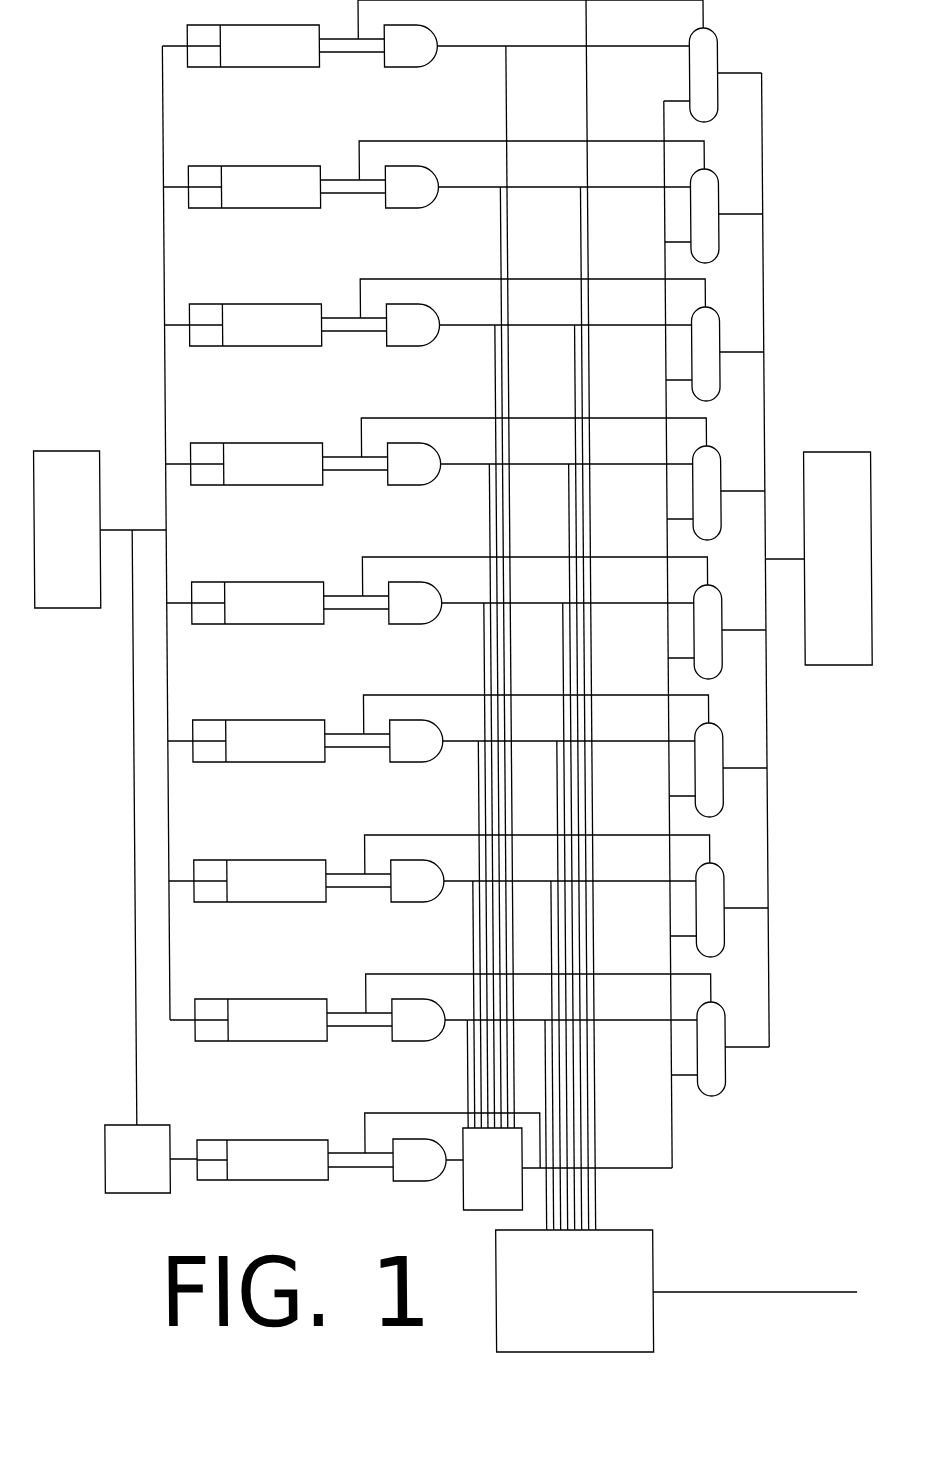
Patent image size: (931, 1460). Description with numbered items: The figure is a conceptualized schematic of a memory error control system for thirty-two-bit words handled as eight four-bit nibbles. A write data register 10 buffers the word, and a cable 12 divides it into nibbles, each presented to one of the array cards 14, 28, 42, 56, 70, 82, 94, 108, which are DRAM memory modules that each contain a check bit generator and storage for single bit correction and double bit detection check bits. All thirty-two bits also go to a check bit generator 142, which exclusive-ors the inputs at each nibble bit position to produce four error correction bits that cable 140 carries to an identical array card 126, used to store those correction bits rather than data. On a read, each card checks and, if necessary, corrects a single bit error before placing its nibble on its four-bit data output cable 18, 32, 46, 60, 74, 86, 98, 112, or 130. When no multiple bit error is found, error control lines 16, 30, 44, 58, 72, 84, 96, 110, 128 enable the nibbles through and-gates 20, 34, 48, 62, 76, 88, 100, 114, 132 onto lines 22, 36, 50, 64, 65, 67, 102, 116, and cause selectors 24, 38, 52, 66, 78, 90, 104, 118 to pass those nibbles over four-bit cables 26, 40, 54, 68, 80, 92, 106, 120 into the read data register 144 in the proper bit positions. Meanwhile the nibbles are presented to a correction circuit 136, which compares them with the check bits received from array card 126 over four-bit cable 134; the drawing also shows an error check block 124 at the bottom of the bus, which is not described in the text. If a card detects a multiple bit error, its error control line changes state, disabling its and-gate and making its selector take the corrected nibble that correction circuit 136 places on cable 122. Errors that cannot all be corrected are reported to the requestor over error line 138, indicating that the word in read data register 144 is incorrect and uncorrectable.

The write data register 10 is at (67, 510).
The cable 12 is at (135, 807).
The array card 14 is at (241, 70).
The error control line 16 is at (501, 19).
The four-bit data output cable 18 is at (351, 75).
The and-gate 20 is at (404, 61).
The line 22 is at (568, 615).
The selector 24 is at (681, 75).
The four-bit cable 26 is at (733, 38).
The array card 28 is at (242, 172).
The error control line 30 is at (502, 158).
The four-bit data output cable 32 is at (339, 217).
The and-gate 34 is at (402, 203).
The line 36 is at (560, 708).
The selector 38 is at (706, 203).
The four-bit cable 40 is at (738, 247).
The array card 42 is at (243, 312).
The error control line 44 is at (505, 293).
The four-bit data output cable 46 is at (348, 351).
The and-gate 48 is at (436, 316).
The line 50 is at (559, 777).
The selector 52 is at (704, 344).
The four-bit cable 54 is at (740, 384).
The array card 56 is at (244, 446).
The error control line 58 is at (507, 438).
The four-bit data output cable 60 is at (353, 490).
The and-gate 62 is at (425, 455).
The line 64 is at (563, 847).
The selector 66 is at (711, 490).
The four-bit cable 68 is at (742, 522).
The array card 70 is at (245, 585).
The error control line 72 is at (507, 571).
The four-bit data output cable 74 is at (352, 636).
The and-gate 76 is at (429, 594).
The line 65 is at (555, 916).
The selector 78 is at (714, 622).
The four-bit cable 80 is at (743, 661).
The array card 82 is at (246, 724).
The error control line 84 is at (510, 706).
The four-bit data output cable 86 is at (355, 767).
The and-gate 88 is at (431, 733).
The line 67 is at (549, 985).
The selector 90 is at (716, 763).
The four-bit cable 92 is at (743, 798).
The array card 94 is at (247, 851).
The error control line 96 is at (508, 849).
The four-bit data output cable 98 is at (357, 912).
The and-gate 100 is at (432, 872).
The line 102 is at (552, 1055).
The selector 104 is at (715, 904).
The four-bit cable 106 is at (743, 941).
The array card 108 is at (249, 1003).
The error control line 110 is at (514, 988).
The four-bit data output cable 112 is at (359, 1046).
The and-gate 114 is at (414, 1010).
The line 116 is at (557, 1125).
The selector 118 is at (719, 1041).
The four-bit cable 120 is at (744, 1084).
The cable 122 is at (593, 634).
The error check circuit 124 is at (594, 1273).
The array card 126 is at (263, 1144).
The error control line 128 is at (425, 1131).
The four-bit data output cable 130 is at (360, 1185).
The and-gate 132 is at (415, 1146).
The four-bit cable 134 is at (439, 1185).
The correction circuit 136 is at (478, 1190).
The error line 138 is at (755, 1271).
The cable 140 is at (214, 1121).
The check bit generator 142 is at (171, 1119).
The read data register 144 is at (818, 538).